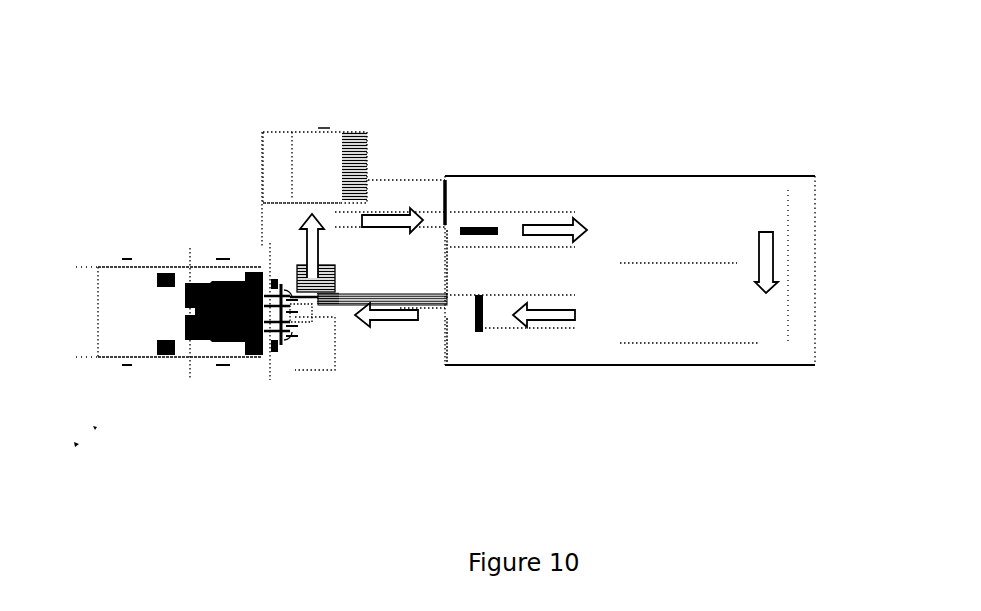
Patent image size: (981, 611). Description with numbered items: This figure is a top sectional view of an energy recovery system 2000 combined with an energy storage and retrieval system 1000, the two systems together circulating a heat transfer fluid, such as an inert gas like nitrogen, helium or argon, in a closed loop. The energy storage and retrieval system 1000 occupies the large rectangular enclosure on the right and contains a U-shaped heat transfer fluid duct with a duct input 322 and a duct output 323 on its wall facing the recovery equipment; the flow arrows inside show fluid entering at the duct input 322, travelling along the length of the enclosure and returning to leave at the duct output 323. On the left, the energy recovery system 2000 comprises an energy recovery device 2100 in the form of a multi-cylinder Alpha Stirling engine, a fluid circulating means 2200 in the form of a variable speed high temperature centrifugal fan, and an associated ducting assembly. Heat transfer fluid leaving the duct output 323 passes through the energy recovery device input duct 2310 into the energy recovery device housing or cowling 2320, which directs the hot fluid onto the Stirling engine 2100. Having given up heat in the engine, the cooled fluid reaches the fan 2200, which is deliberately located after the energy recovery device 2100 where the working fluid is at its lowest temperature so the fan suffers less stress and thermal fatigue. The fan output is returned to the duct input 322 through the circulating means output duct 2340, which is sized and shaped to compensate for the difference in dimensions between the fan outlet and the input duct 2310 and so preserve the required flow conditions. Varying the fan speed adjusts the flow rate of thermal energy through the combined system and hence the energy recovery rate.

The energy storage and retrieval system 1000 is at (665, 173).
The energy recovery system 2000 is at (228, 183).
The energy recovery device 2100 is at (166, 271).
The fluid circulating means 2200 is at (337, 128).
The energy recovery device input duct 2310 is at (385, 329).
The energy recovery device housing or cowling 2320 is at (312, 378).
The circulating means output duct 2340 is at (388, 221).
The duct input 322 is at (447, 212).
The duct output 323 is at (448, 321).